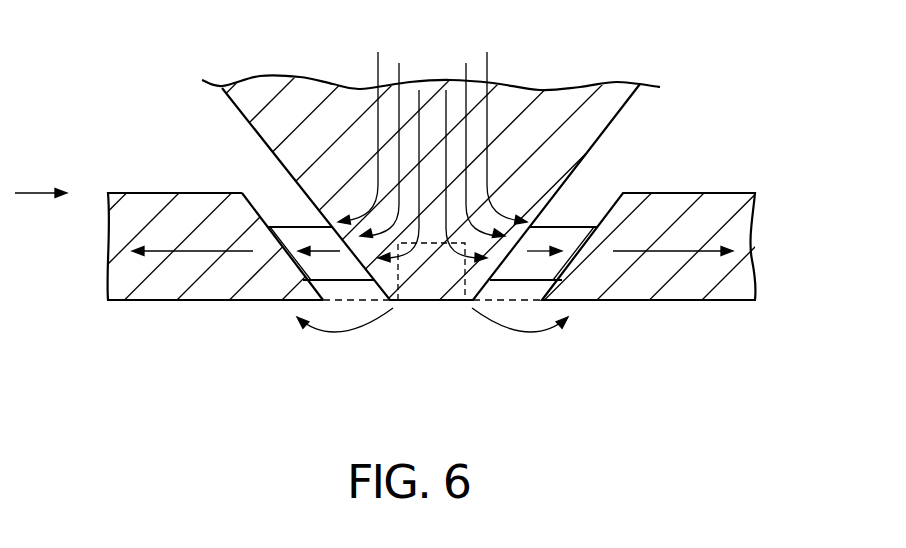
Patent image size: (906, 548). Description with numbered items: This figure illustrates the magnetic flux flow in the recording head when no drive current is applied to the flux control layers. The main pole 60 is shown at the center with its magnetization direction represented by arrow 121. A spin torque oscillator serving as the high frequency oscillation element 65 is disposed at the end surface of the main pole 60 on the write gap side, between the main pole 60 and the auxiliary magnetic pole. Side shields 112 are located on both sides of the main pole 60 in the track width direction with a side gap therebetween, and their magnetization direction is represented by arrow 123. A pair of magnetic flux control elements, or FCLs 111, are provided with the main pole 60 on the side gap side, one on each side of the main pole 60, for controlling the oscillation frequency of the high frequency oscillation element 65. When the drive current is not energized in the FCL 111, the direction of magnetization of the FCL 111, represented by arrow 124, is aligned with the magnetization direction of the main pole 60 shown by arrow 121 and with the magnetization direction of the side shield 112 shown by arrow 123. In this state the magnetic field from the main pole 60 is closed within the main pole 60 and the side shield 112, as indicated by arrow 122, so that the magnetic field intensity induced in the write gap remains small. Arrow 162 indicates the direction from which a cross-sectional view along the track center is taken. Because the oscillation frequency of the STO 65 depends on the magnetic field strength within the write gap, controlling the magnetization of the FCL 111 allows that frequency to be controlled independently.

The main pole 60 is at (600, 132).
The high frequency oscillation element 65 is at (433, 294).
The magnetic flux control element (FCL) 111 is at (312, 228).
The side shield 112 is at (738, 235).
The arrow representing main pole magnetization direction 121 is at (493, 107).
The arrow representing closed magnetic field 122 is at (340, 333).
The arrow representing side shield magnetization direction 123 is at (193, 250).
The arrow representing FCL magnetization direction 124 is at (298, 284).
The arrow indicating viewing direction 162 is at (32, 193).